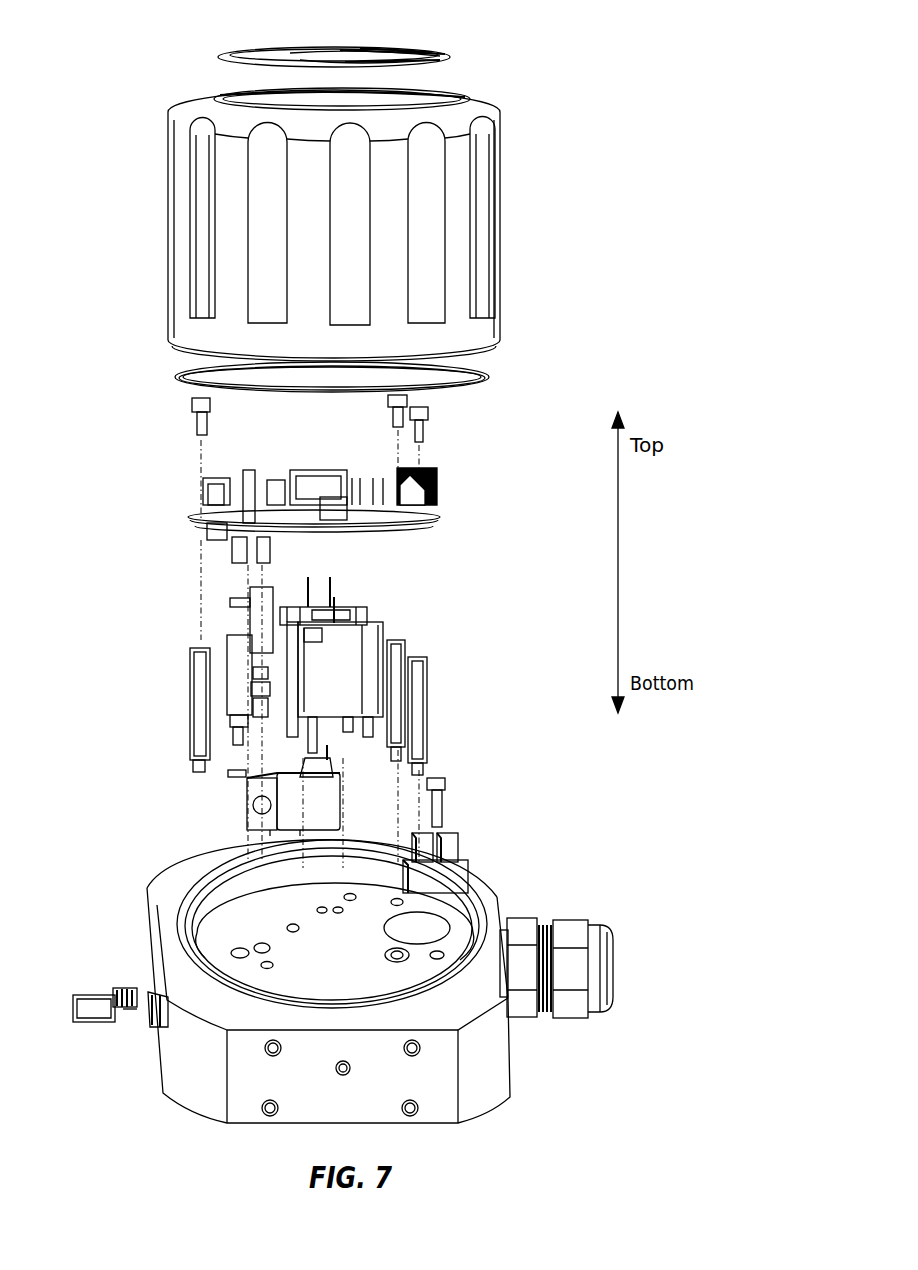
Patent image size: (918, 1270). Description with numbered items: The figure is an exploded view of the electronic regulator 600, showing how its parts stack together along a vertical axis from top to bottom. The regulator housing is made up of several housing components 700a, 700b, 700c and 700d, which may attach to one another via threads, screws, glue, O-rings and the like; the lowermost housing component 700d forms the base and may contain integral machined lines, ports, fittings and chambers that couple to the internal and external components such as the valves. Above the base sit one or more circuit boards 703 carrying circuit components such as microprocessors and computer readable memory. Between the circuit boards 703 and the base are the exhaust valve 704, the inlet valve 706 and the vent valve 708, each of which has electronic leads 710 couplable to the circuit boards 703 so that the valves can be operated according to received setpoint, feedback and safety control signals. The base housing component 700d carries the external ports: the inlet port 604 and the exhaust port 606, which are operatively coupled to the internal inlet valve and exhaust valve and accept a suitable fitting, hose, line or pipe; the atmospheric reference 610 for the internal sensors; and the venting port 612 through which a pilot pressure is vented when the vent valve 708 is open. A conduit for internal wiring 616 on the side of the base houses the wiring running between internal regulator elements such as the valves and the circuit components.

The electronic regulator 600 is at (140, 72).
The housing component 700a is at (415, 48).
The housing component 700b is at (458, 260).
The housing component 700c is at (488, 374).
The circuit board 703 is at (443, 520).
The exhaust valve 704 is at (384, 629).
The inlet valve 706 is at (362, 610).
The electronic leads 710 is at (352, 603).
The vent valve 708 is at (247, 805).
The housing component 700d is at (490, 1065).
The inlet port 604 is at (143, 931).
The exhaust port 606 is at (163, 1017).
The venting port 612 is at (157, 993).
The atmospheric reference 610 is at (147, 1011).
The conduit for internal wiring 616 is at (570, 930).